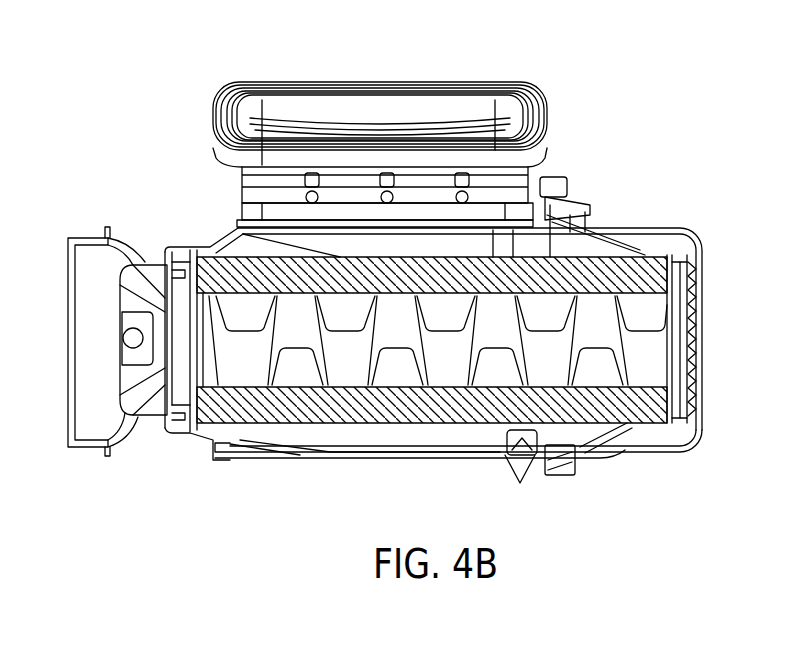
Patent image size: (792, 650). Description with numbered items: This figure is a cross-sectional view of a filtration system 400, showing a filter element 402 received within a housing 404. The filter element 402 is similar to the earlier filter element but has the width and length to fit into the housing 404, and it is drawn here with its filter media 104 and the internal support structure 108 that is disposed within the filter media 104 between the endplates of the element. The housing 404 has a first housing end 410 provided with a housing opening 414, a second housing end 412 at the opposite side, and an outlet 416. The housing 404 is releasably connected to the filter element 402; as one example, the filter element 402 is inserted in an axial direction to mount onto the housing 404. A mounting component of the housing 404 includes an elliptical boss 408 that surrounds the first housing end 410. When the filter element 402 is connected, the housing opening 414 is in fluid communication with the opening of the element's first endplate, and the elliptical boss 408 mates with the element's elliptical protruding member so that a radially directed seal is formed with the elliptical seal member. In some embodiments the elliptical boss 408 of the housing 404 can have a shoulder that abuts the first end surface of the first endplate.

The filtration system 400 is at (158, 150).
The outlet 416 is at (413, 108).
The filter element 402 is at (662, 241).
The second housing end 412 is at (709, 338).
The filter media 104 is at (250, 413).
The internal support structure 108 is at (346, 366).
The housing 404 is at (678, 437).
The elliptical boss 408 is at (178, 428).
The first housing end 410 is at (163, 243).
The housing opening 414 is at (67, 340).